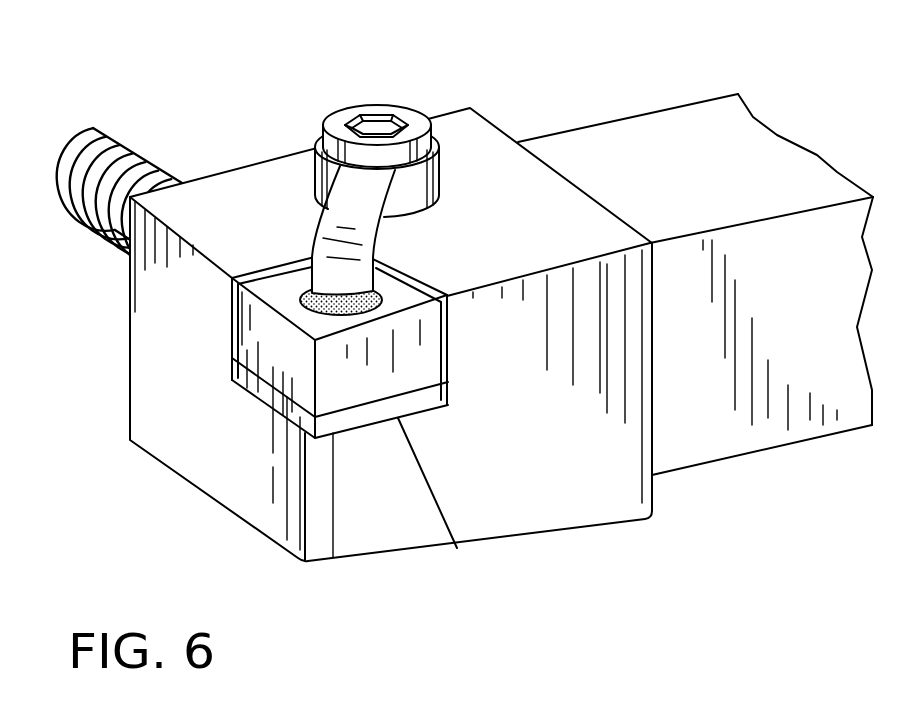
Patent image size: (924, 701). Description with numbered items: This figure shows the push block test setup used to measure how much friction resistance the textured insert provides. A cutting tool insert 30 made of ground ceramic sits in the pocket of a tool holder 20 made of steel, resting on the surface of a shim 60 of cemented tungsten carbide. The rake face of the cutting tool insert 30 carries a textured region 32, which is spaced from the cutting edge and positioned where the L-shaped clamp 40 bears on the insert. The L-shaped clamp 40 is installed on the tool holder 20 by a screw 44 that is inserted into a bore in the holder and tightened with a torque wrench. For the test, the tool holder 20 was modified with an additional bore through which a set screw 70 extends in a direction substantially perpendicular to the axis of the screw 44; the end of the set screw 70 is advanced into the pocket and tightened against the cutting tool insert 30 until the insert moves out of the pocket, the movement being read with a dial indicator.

The tool holder 20 is at (622, 118).
The cutting tool insert 30 is at (230, 342).
The textured region 32 is at (303, 308).
The L-shaped clamp 40 is at (315, 167).
The screw 44 is at (405, 108).
The shim 60 is at (317, 425).
The set screw 70 is at (67, 128).